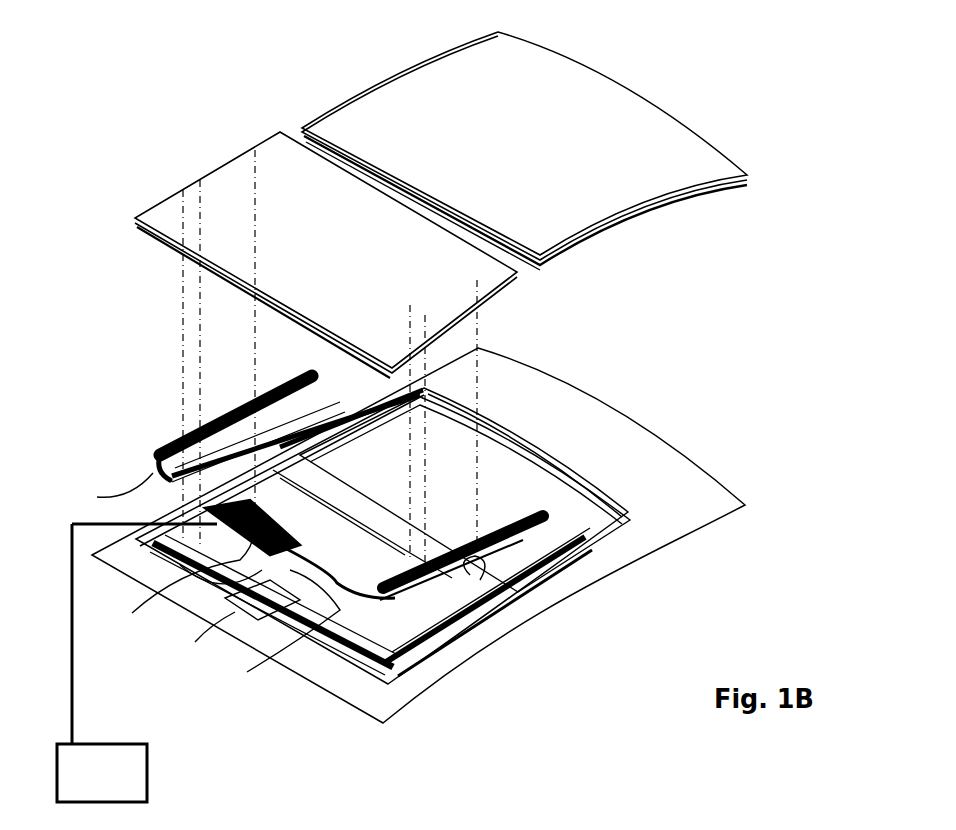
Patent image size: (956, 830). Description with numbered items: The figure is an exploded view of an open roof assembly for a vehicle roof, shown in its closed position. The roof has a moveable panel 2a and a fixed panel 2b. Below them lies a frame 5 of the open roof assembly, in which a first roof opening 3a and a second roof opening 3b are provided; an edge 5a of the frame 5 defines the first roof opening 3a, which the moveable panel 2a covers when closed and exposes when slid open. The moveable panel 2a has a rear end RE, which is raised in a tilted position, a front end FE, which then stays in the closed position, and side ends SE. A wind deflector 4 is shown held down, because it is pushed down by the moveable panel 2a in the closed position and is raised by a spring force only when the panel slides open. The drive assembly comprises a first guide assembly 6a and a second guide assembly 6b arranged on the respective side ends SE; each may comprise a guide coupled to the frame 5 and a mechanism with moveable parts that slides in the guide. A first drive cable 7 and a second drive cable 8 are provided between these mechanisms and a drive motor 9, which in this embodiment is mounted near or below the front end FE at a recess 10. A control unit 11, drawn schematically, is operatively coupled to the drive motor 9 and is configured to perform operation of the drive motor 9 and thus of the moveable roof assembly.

The moveable panel 2a is at (326, 255).
The fixed panel 2b is at (524, 151).
The first roof opening 3a is at (301, 532).
The second roof opening 3b is at (465, 494).
The wind deflector 4 is at (147, 540).
The frame 5 is at (470, 660).
The edge 5a is at (476, 622).
The first guide assembly 6a is at (490, 562).
The second guide assembly 6b is at (158, 414).
The first drive cable 7 is at (288, 636).
The second drive cable 8 is at (112, 494).
The drive motor 9 is at (187, 579).
The recess 10 is at (237, 627).
The control unit 11 is at (102, 663).
The rear end RE is at (333, 163).
The side end SE is at (213, 172).
The front end FE is at (230, 293).